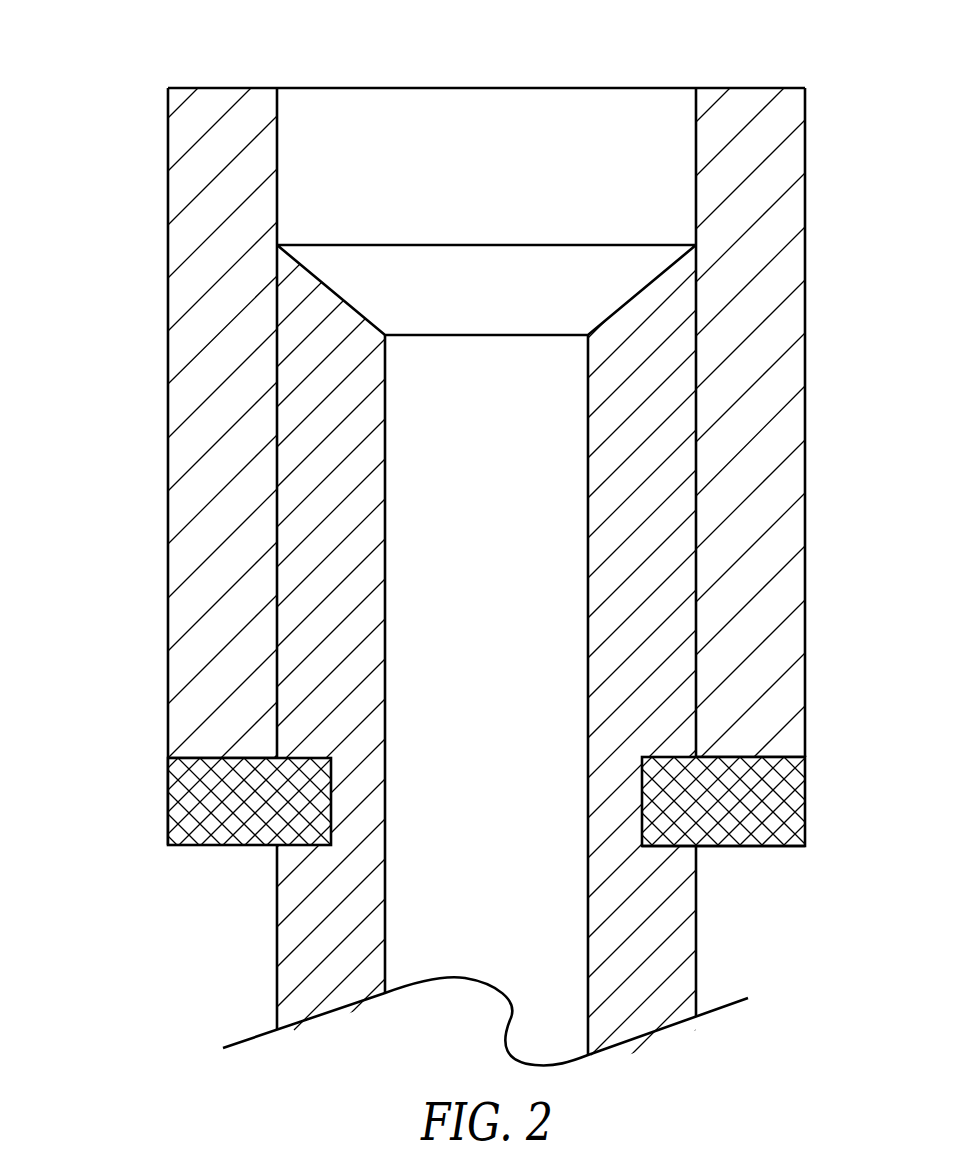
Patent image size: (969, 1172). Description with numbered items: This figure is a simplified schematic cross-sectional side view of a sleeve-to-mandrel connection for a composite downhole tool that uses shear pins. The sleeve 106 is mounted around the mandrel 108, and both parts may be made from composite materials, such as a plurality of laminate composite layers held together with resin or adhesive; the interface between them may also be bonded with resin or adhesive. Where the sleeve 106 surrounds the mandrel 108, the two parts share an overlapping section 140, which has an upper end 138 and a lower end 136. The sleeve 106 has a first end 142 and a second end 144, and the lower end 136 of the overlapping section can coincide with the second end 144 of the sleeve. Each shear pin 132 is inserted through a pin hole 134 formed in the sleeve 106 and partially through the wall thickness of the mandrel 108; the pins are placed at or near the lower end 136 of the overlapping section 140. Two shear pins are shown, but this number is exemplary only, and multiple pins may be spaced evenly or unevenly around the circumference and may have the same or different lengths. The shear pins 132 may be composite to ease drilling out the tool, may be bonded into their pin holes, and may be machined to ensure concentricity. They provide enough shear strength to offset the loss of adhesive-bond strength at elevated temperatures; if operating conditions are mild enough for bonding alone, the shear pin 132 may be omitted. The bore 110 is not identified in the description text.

The sleeve 106 is at (236, 160).
The mandrel 108 is at (496, 303).
The bore 110 is at (496, 416).
The shear pin 132 is at (267, 808).
The pin hole 134 is at (814, 757).
The lower end 136 is at (166, 817).
The upper end 138 is at (167, 245).
The overlapping section 140 is at (123, 245).
The first end 142 is at (230, 88).
The second end 144 is at (737, 846).